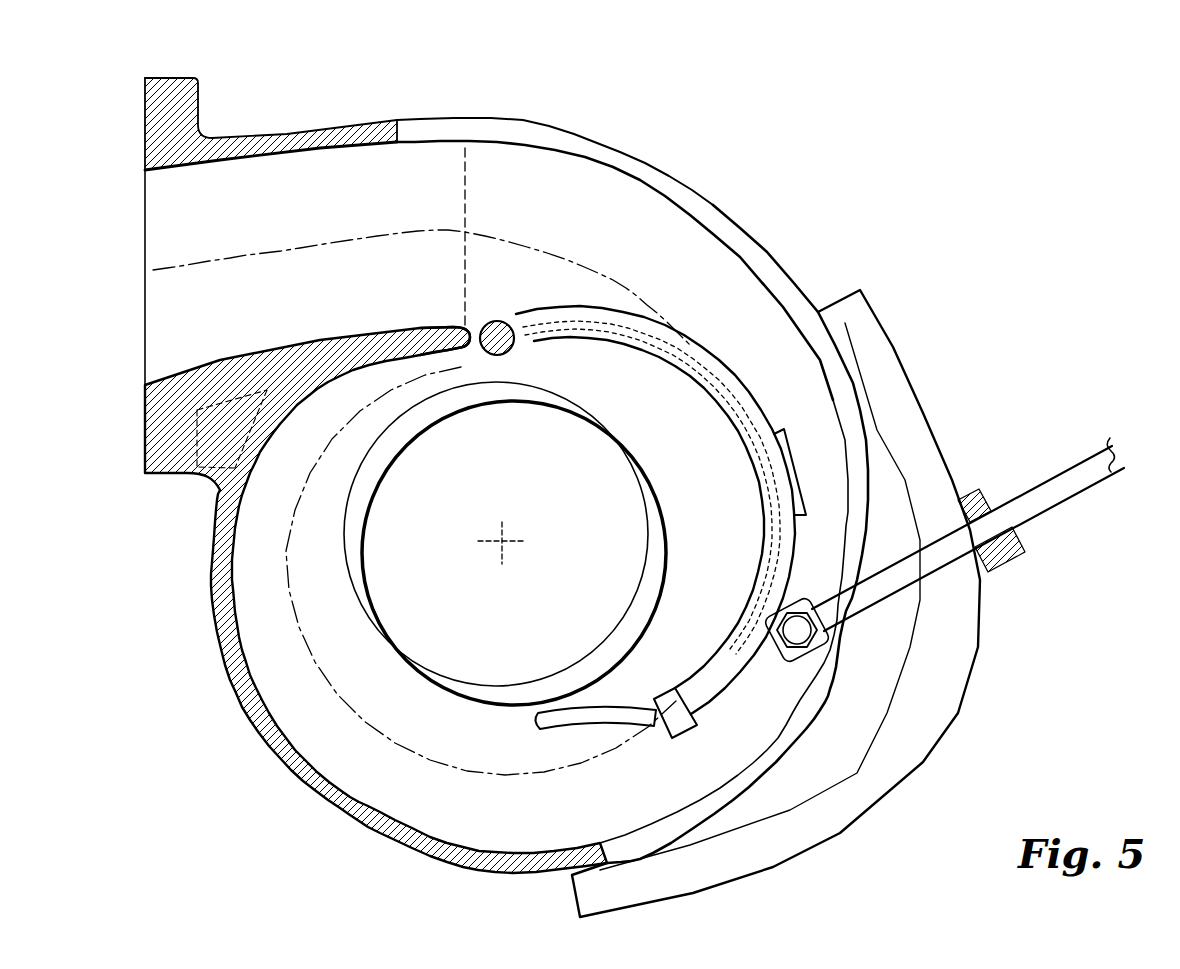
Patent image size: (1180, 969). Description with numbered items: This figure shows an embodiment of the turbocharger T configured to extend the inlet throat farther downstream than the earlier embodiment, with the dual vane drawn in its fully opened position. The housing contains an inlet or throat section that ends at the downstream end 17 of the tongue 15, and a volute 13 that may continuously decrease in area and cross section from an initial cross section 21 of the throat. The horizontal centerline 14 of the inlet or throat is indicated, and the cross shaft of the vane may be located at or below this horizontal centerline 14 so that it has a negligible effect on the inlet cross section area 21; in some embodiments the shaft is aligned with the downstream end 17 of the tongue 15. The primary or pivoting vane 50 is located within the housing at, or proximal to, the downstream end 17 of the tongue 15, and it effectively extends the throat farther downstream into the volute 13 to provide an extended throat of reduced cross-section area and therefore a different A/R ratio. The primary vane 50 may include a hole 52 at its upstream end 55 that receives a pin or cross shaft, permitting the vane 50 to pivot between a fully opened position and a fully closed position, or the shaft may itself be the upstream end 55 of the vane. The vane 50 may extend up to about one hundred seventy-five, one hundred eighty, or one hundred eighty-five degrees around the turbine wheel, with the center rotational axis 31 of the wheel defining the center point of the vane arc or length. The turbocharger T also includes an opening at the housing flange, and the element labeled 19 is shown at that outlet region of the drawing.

The turbocharger T is at (401, 107).
The volute 13 is at (556, 198).
The horizontal centerline 14 is at (300, 242).
The tongue 15 is at (240, 358).
The downstream end 17 is at (465, 320).
The outlet opening 19 is at (143, 252).
The initial cross section 21 is at (463, 178).
The center rotational axis 31 is at (501, 540).
The primary vane 50 is at (587, 307).
The hole 52 is at (510, 380).
The upstream end 55 is at (507, 322).